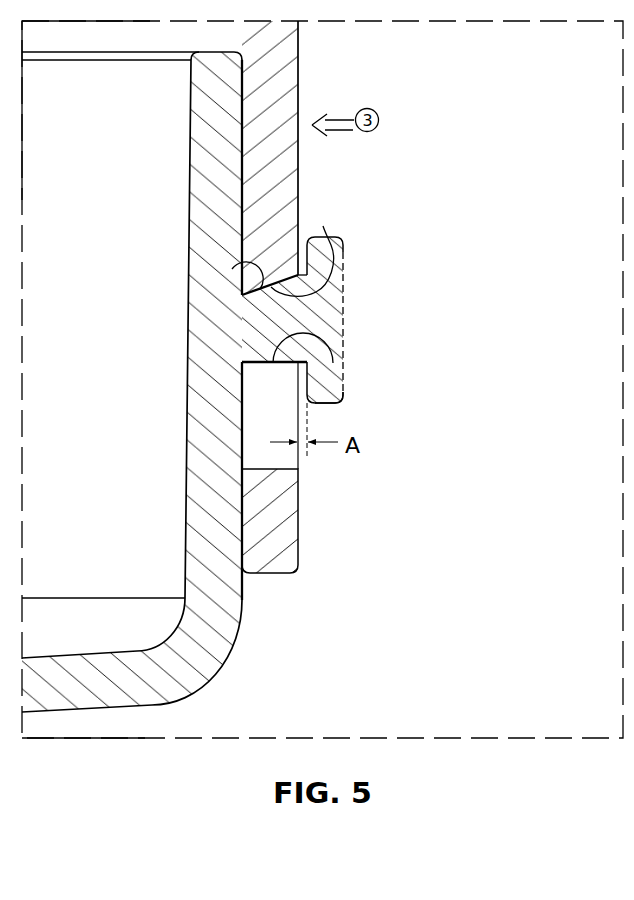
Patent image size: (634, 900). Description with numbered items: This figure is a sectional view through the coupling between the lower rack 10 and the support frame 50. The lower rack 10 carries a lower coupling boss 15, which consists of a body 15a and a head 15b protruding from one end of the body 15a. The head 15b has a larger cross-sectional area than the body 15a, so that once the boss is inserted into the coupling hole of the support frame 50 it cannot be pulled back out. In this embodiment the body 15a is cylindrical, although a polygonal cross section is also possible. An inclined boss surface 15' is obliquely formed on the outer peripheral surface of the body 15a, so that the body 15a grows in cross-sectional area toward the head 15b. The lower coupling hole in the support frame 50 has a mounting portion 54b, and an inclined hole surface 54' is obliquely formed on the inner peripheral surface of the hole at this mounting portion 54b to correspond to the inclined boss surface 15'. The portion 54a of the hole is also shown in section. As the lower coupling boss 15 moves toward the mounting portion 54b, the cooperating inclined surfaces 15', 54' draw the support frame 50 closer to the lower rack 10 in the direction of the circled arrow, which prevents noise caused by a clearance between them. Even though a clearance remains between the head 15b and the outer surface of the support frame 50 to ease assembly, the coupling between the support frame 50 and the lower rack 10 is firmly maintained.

The lower rack 10 is at (198, 232).
The lower coupling boss 15 is at (378, 320).
The inclined boss surface 15' is at (190, 300).
The body 15a is at (267, 330).
The head 15b is at (338, 258).
The support frame 50 is at (305, 79).
The inclined hole surface 54' is at (351, 276).
The first groove wall 54a is at (277, 455).
The mounting portion 54b is at (338, 360).